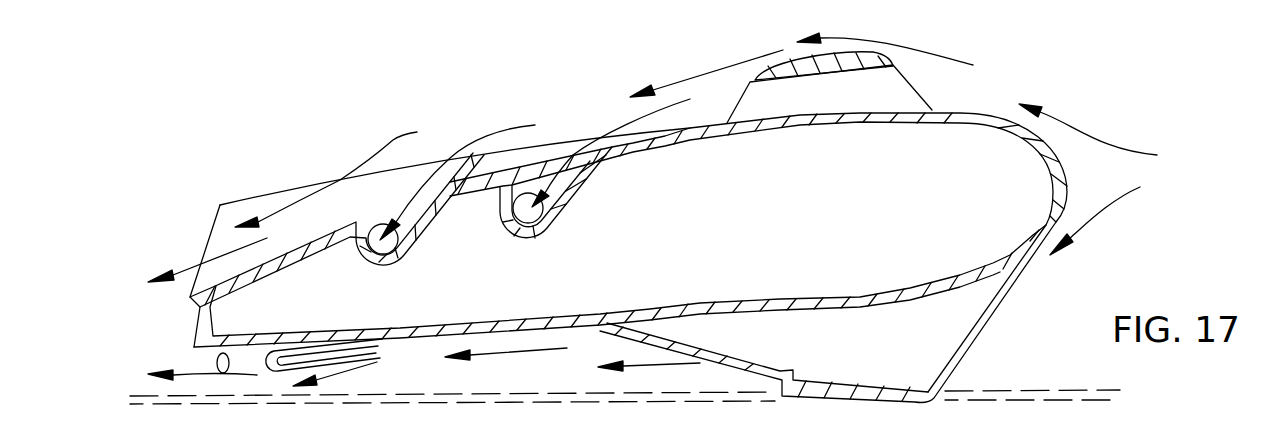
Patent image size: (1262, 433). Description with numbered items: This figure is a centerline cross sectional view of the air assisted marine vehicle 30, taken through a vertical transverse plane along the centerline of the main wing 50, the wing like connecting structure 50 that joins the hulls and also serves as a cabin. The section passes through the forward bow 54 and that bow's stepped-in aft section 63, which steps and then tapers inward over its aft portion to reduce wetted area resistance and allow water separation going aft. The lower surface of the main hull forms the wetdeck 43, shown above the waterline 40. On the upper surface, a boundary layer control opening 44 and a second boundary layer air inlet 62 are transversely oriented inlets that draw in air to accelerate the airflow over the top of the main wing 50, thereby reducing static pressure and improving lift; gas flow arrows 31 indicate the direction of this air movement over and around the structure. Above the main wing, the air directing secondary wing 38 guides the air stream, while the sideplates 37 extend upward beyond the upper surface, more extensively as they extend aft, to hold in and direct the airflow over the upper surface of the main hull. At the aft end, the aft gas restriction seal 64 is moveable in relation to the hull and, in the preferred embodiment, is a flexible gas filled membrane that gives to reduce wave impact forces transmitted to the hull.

The marine vehicle 30 is at (400, 165).
The gas flow arrows 31 is at (506, 128).
The sideplates 37 is at (262, 196).
The air directing secondary wing 38 is at (895, 67).
The waterline 40 is at (436, 404).
The wetdeck 43 is at (430, 338).
The boundary layer control opening 44 is at (563, 157).
The wing like connecting structure 50 is at (712, 133).
The forward bow 54 is at (963, 355).
The second boundary layer air inlet 62 is at (430, 214).
The stepped-in aft section 63 is at (732, 364).
The aft gas restriction seal 64 is at (345, 338).